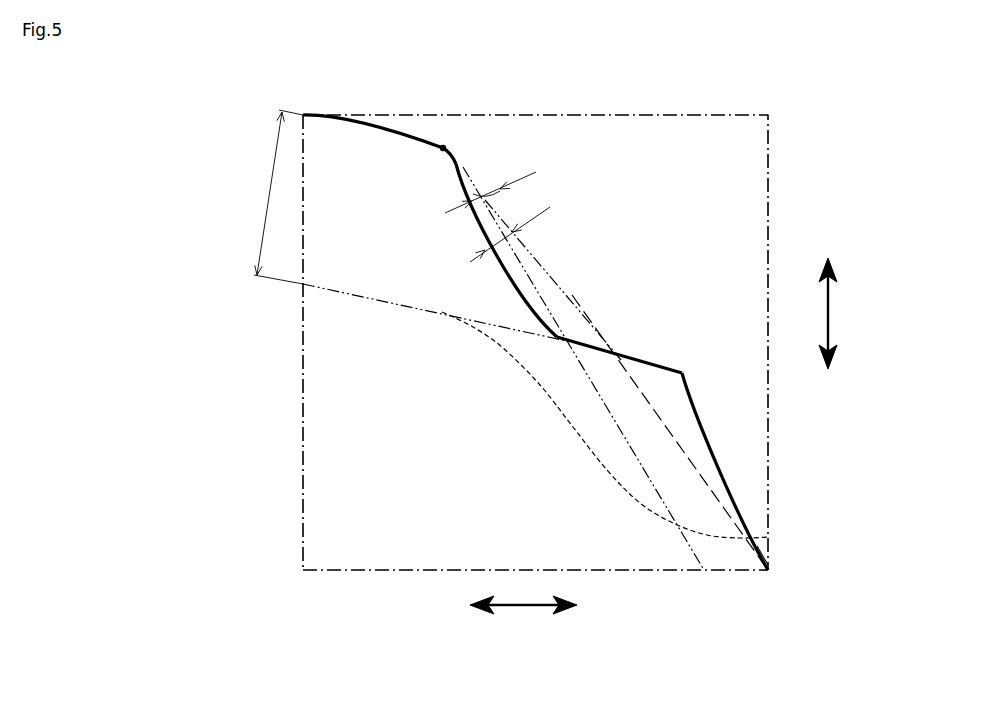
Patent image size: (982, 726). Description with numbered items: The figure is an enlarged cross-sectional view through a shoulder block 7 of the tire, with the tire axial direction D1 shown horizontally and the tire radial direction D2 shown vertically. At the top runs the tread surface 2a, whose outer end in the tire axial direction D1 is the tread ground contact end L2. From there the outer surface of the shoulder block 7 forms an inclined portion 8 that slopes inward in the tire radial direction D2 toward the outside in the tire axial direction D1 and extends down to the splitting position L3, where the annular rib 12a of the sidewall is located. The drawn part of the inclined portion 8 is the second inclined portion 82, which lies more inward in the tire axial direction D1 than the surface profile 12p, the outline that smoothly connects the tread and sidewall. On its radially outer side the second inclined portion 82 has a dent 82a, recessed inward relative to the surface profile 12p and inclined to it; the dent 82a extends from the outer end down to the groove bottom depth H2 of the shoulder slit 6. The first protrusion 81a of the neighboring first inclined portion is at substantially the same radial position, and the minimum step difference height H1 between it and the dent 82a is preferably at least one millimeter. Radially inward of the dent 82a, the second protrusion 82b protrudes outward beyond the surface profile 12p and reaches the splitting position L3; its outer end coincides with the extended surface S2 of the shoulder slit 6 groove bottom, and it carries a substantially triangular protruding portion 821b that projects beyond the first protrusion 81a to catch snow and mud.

The tread surface 2a is at (379, 102).
The shoulder block 7 is at (383, 128).
The tread ground contact end L2 is at (445, 147).
The inclined portion 8 is at (611, 150).
The second inclined portion 82 is at (635, 351).
The minimum step difference height H1 is at (490, 185).
The dent 82a is at (521, 298).
The surface profile 12p is at (563, 314).
The first protrusion 81a is at (600, 332).
The protruding portion 821b is at (683, 373).
The second protrusion 82b is at (708, 414).
The groove bottom depth H2 is at (273, 192).
The shoulder slit 6 is at (337, 288).
The extended surface S2 is at (442, 312).
The splitting position L3 is at (758, 555).
The annular rib 12a is at (747, 562).
The tire axial direction D1 is at (523, 614).
The tire radial direction D2 is at (838, 313).